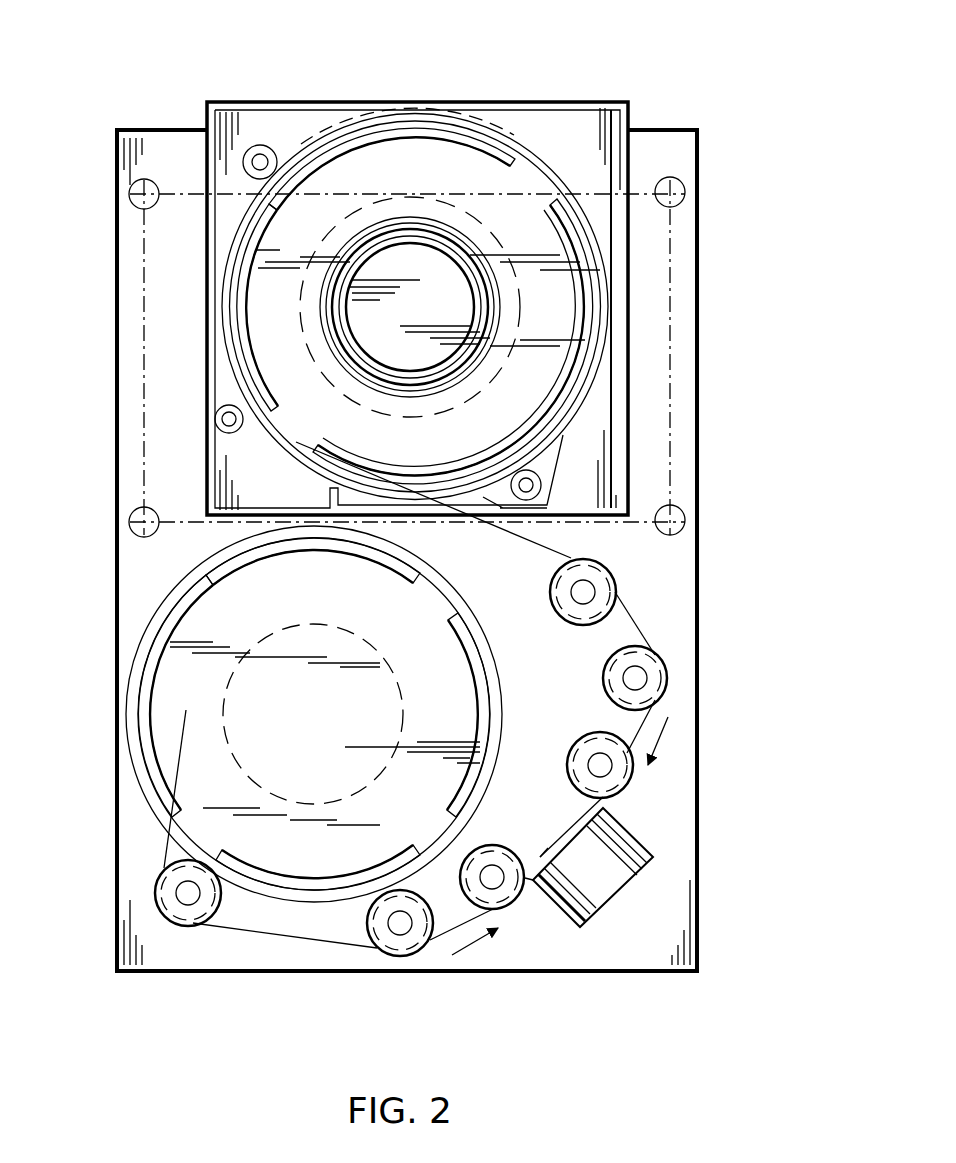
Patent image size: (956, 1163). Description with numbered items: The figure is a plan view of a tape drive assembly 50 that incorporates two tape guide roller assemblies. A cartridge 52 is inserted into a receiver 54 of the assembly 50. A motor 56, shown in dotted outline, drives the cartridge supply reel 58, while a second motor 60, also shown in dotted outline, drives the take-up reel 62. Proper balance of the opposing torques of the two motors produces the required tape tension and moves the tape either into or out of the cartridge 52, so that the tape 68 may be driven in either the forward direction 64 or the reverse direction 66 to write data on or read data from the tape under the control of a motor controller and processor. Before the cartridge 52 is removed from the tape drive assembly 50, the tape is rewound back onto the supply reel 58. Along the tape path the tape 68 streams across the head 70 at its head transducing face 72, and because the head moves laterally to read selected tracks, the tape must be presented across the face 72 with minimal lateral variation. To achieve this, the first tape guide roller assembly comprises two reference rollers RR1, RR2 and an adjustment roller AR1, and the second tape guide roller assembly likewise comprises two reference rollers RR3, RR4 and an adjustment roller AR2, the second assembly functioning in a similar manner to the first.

The tape drive assembly 50 is at (735, 376).
The cartridge 52 is at (598, 144).
The receiver 54 is at (644, 447).
The motor 56 is at (404, 188).
The cartridge supply reel 58 is at (255, 331).
The motor 60 is at (320, 622).
The take-up reel 62 is at (192, 663).
The forward direction 64 is at (662, 726).
The reverse direction 66 is at (475, 973).
The tape 68 is at (468, 502).
The head 70 is at (640, 845).
The head transducing face 72 is at (565, 826).
The reference roller RR1 is at (583, 592).
The adjustment roller AR1 is at (635, 678).
The reference roller RR2 is at (598, 765).
The reference roller RR3 is at (492, 877).
The adjustment roller AR2 is at (400, 923).
The reference roller RR4 is at (188, 893).